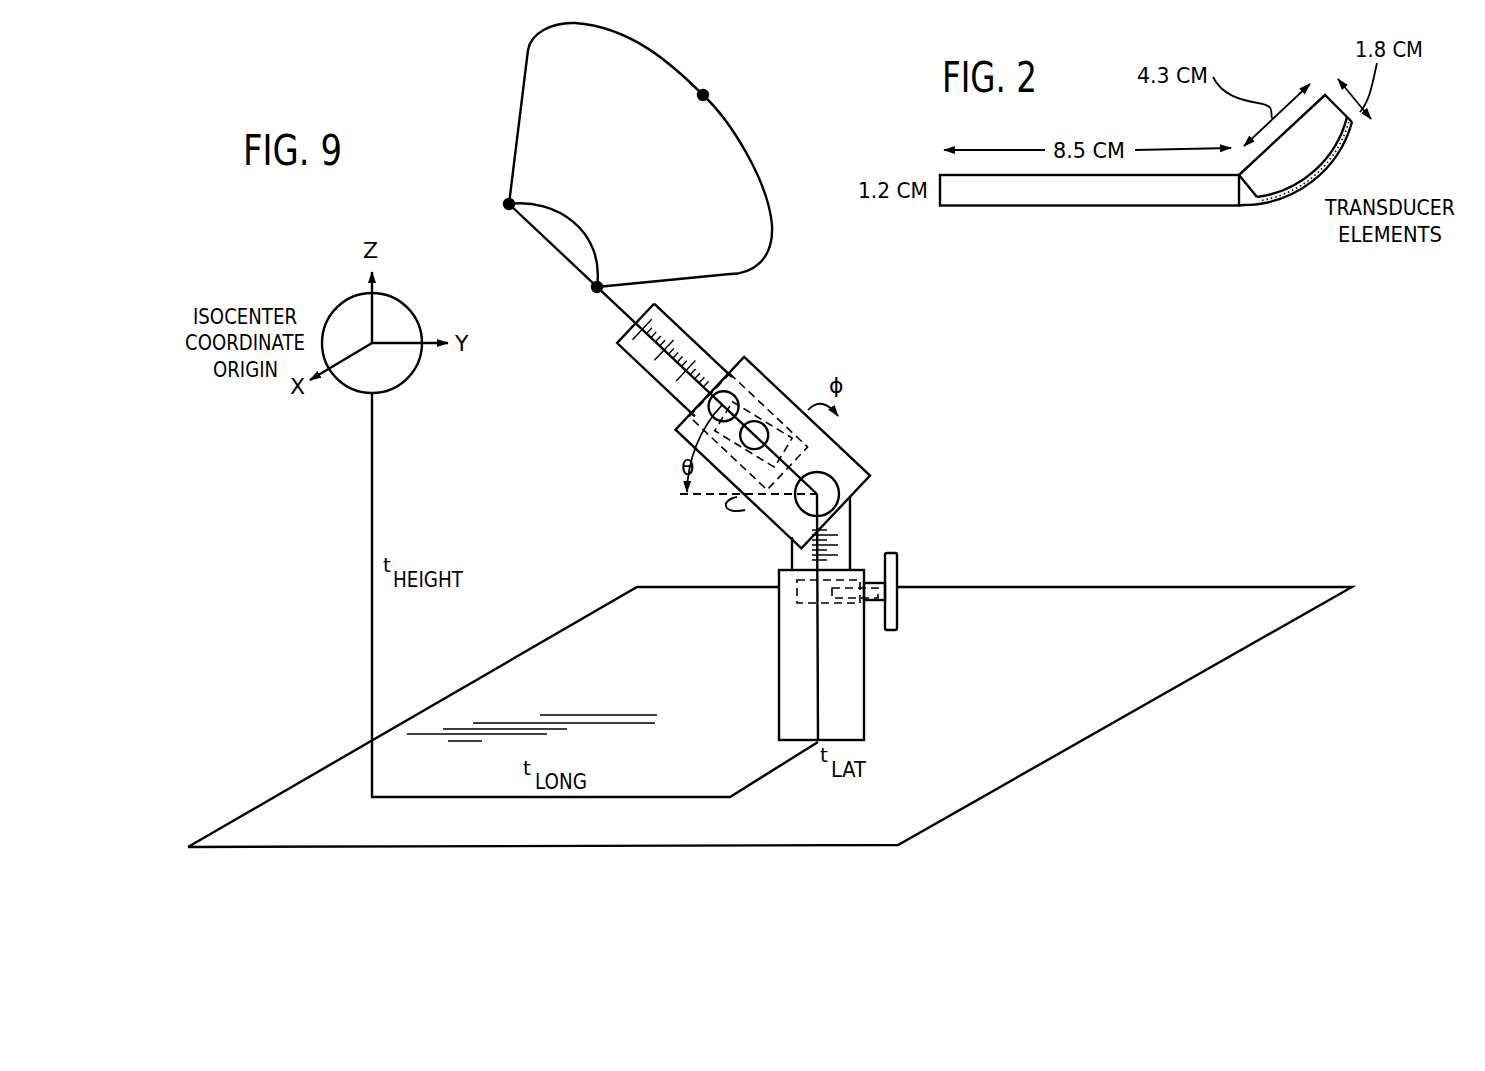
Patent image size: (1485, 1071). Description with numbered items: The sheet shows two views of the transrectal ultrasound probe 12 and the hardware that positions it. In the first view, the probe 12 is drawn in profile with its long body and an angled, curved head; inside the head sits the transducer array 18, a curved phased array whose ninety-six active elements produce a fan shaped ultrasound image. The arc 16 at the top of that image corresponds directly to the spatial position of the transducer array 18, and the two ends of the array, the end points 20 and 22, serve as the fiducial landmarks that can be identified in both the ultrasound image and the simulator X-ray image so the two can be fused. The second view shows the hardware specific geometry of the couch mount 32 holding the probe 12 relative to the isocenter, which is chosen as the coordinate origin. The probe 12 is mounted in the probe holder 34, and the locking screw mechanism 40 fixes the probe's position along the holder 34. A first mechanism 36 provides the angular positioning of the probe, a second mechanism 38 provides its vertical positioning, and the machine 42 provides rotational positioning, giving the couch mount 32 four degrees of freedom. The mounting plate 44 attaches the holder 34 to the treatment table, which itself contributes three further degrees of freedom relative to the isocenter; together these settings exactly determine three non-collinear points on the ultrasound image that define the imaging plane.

In FIG. 9, the transrectal ultrasound probe 12 is at (526, 227).
In FIG. 2, the transrectal ultrasound probe 12 is at (1142, 228).
In FIG. 2, the arc 16 is at (1318, 161).
In FIG. 2, the transducer array 18 is at (1353, 137).
In FIG. 9, the end point 20 is at (503, 181).
In FIG. 2, the end point 20 is at (1358, 133).
In FIG. 9, the end point 22 is at (587, 288).
In FIG. 2, the end point 22 is at (1257, 208).
In FIG. 9, the couch mount 32 is at (744, 547).
In FIG. 9, the probe holder 34 is at (689, 325).
In FIG. 9, the first mechanism 36 is at (843, 491).
In FIG. 9, the second mechanism 38 is at (788, 555).
In FIG. 9, the third locking screw mechanism 40 is at (675, 398).
In FIG. 9, the machine for rotational positioning 42 is at (786, 385).
In FIG. 9, the mounting plate 44 is at (1029, 696).